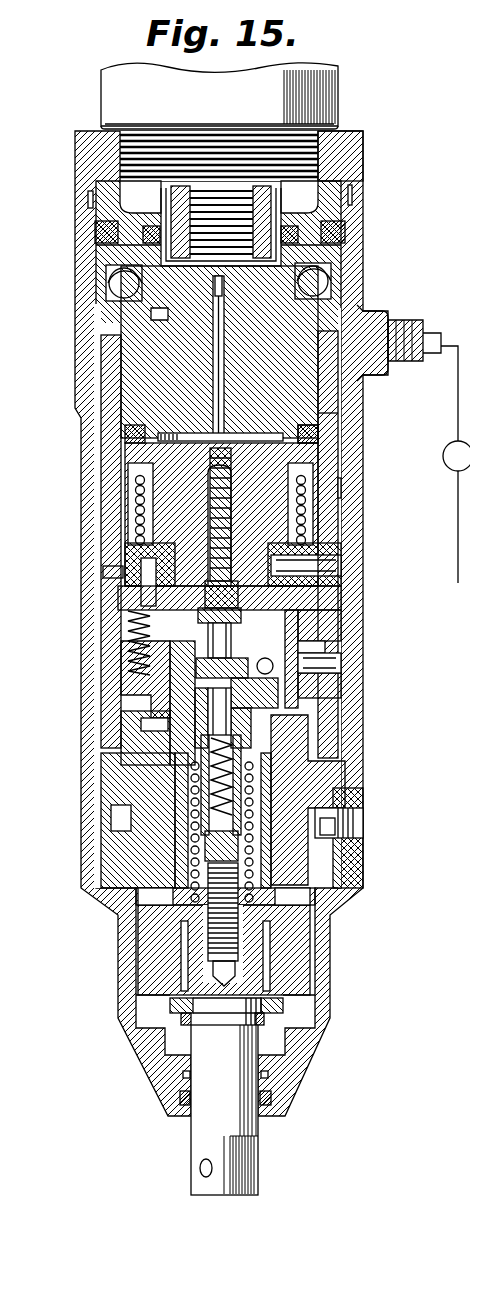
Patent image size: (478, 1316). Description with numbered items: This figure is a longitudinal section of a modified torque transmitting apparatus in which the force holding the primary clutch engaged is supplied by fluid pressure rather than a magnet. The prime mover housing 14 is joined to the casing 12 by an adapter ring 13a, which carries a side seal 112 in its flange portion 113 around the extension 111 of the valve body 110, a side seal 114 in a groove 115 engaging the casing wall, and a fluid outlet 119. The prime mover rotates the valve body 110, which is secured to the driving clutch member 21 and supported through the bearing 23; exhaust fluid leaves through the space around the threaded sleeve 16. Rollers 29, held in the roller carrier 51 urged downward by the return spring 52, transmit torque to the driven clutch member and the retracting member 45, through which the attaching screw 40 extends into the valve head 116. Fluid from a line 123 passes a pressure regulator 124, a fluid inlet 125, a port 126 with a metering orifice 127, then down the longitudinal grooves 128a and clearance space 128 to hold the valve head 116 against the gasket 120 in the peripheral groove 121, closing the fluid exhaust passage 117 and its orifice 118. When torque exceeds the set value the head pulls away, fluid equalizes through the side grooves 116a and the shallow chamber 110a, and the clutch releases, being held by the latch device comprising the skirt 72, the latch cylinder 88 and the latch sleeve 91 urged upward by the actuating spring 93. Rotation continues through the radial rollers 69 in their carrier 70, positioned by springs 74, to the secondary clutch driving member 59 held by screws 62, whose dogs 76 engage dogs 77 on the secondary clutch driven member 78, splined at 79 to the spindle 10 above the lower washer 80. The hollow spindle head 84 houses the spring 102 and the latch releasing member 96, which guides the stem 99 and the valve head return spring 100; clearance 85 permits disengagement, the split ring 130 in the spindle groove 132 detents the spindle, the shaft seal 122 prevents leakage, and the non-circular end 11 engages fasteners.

The spindle 10 is at (235, 1118).
The non-circular end 11 is at (185, 1158).
The casing 12 is at (347, 680).
The adapter ring 13a is at (345, 165).
The prime mover housing 14 is at (273, 80).
The threaded sleeve 16 is at (110, 264).
The driving clutch member 21 is at (100, 517).
The anti-friction radial and thrust bearing 23 is at (112, 278).
The rollers 29 is at (323, 552).
The attaching screw 40 is at (213, 547).
The retracting member 45 is at (293, 592).
The roller carrier 51 is at (307, 537).
The return spring 52 is at (130, 528).
The secondary clutch driving member 59 is at (283, 775).
The screws 62 is at (337, 812).
The radial roller elements 69 is at (320, 655).
The carrier 70 is at (307, 632).
The depending skirt portion 72 is at (147, 628).
The helical compression springs 74 is at (123, 615).
The driving clutch dogs 76 is at (143, 892).
The driven clutch dogs 77 is at (290, 892).
The secondary clutch driven member 78 is at (280, 942).
The spline connection 79 is at (177, 957).
The lower washer 80 is at (288, 997).
The hollow spindle head 84 is at (173, 820).
The clearance 85 is at (143, 1010).
The upwardly extending cylindrical portion 88 is at (165, 665).
The latch cam and retainer sleeve 91 is at (157, 703).
The helical actuating spring 93 is at (243, 733).
The latch releasing member 96 is at (233, 803).
The depending stem 99 is at (213, 634).
The valve head return spring 100 is at (200, 760).
The helical compression spring 102 is at (200, 805).
The valve body 110 is at (127, 372).
The shallow chamber 110a is at (150, 435).
The extension 111 is at (82, 187).
The side seal 112 is at (160, 250).
The flange portion 113 is at (290, 240).
The side seal 114 is at (337, 225).
The groove 115 is at (350, 205).
The valve head 116 is at (130, 483).
The side grooves 116a is at (307, 450).
The fluid exhaust passage 117 is at (208, 340).
The orifice 118 is at (210, 275).
The fluid outlet 119 is at (337, 127).
The gasket 120 is at (332, 420).
The peripheral groove 121 is at (307, 413).
The shaft seal 122 is at (260, 1092).
The line 123 is at (436, 464).
The pressure regulator 124 is at (435, 448).
The fluid inlet 125 is at (400, 313).
The port 126 is at (363, 310).
The metering orifice 127 is at (356, 300).
The clearance space 128 is at (95, 548).
The longitudinal grooves 128a is at (333, 480).
The split contractile ring 130 is at (178, 1067).
The spindle groove 132 is at (248, 1033).